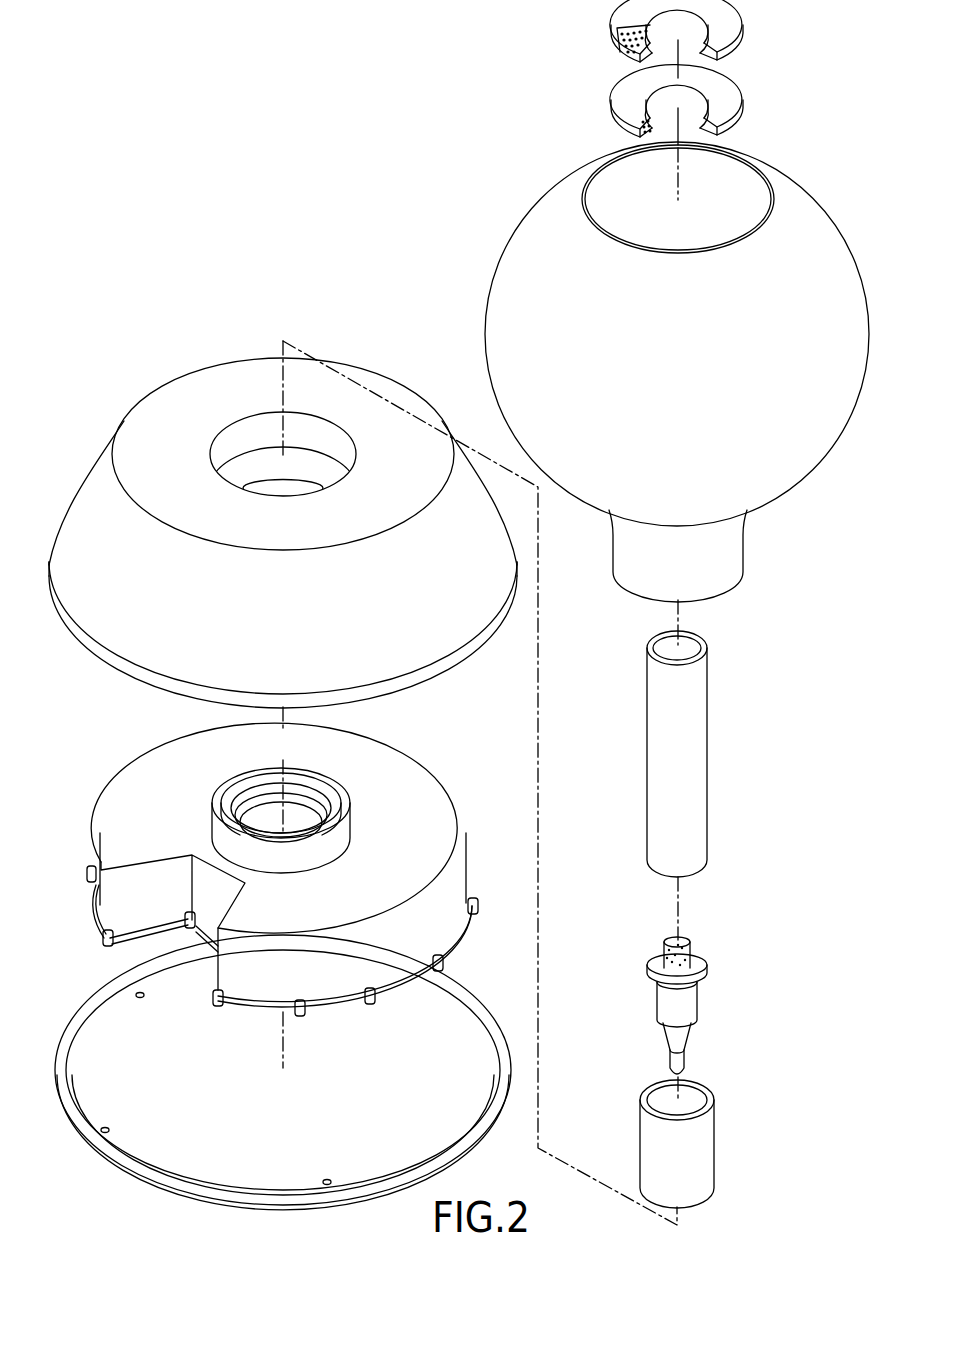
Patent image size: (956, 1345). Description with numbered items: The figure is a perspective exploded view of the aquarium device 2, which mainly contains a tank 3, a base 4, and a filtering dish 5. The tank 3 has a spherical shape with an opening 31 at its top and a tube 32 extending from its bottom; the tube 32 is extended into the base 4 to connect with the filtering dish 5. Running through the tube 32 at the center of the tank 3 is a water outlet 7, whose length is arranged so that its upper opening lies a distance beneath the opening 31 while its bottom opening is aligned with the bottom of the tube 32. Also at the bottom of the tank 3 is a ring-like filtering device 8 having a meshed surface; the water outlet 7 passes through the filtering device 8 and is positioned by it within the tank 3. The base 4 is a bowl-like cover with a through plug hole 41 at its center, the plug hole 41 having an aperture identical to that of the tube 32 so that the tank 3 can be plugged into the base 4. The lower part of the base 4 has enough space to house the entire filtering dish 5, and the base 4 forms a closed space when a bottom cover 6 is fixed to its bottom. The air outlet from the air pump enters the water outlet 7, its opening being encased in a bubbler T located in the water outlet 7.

The aquarium device 2 is at (186, 175).
The tank 3 is at (528, 262).
The opening 31 is at (610, 168).
The tube 32 is at (740, 556).
The base 4 is at (152, 398).
The plug hole 41 is at (232, 435).
The filtering dish 5 is at (125, 796).
The bottom cover 6 is at (108, 1018).
The water outlet 7 is at (712, 778).
The filtering device 8 is at (622, 15).
The bubbler T is at (690, 948).